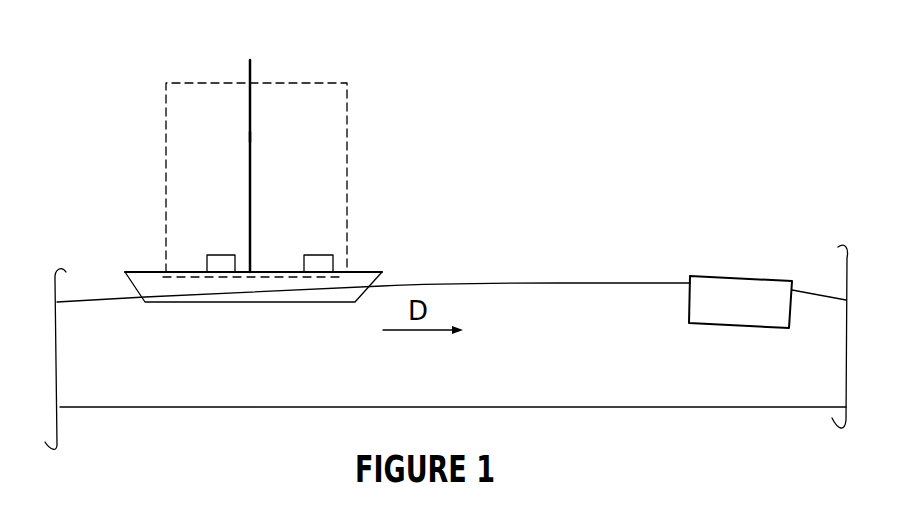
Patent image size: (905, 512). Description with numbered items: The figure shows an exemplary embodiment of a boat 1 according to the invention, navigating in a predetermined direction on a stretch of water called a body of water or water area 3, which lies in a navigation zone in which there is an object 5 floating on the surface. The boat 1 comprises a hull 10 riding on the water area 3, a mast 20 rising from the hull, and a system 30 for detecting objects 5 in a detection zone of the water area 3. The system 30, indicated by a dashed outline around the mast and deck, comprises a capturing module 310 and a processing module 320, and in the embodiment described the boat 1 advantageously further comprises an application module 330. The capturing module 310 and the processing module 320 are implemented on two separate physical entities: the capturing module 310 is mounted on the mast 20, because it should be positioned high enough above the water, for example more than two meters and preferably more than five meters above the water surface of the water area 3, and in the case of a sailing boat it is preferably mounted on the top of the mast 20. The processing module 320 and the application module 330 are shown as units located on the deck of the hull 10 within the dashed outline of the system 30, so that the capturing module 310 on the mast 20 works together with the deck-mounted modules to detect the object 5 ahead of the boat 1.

The boat 1 is at (76, 126).
The water area 3 is at (600, 395).
The object 5 is at (773, 280).
The hull 10 is at (152, 282).
The mast 20 is at (252, 137).
The system for detecting objects 30 is at (199, 83).
The capturing module 310 is at (256, 110).
The processing module 320 is at (217, 255).
The application module 330 is at (315, 255).